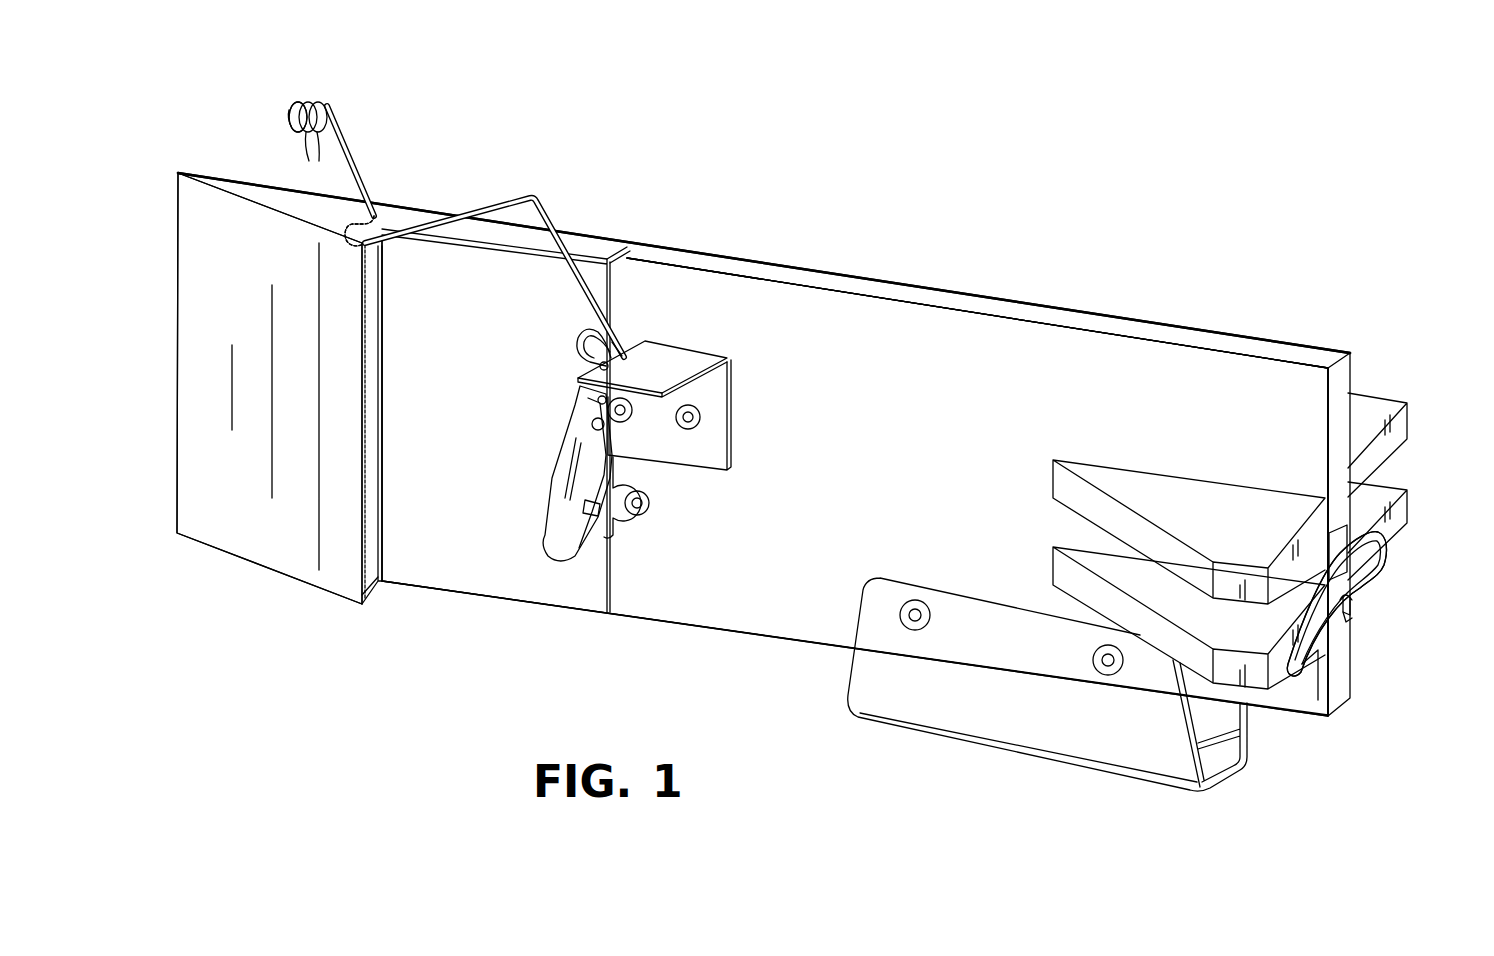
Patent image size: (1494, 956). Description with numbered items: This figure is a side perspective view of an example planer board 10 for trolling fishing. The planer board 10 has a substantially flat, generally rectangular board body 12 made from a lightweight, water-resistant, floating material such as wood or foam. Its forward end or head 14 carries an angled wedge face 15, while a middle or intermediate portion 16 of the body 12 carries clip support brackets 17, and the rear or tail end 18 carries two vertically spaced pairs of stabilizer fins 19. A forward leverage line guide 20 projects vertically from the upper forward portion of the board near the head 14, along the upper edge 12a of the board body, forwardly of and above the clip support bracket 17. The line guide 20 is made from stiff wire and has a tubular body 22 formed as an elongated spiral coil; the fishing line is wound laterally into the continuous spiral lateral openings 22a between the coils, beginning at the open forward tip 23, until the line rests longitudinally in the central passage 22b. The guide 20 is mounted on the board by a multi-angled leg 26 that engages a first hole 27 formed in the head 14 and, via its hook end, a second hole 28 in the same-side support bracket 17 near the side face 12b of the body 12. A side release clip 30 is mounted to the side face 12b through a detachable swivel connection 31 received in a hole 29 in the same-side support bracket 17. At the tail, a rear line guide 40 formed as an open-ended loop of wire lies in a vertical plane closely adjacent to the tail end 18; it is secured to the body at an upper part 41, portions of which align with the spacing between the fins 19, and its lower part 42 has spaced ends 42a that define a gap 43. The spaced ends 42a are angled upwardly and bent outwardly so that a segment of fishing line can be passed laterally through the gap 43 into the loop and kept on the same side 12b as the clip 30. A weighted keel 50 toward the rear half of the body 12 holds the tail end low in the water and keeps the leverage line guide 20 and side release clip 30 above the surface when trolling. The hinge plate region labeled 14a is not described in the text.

The planer board 10 is at (1133, 160).
The board body 12 is at (873, 270).
The upper edge 12a is at (782, 277).
The side face 12b is at (842, 438).
The head 14 is at (217, 177).
The hinge plate 14a is at (408, 215).
The angled wedge face 15 is at (209, 340).
The intermediate portion 16 is at (920, 353).
The clip support bracket 17 is at (685, 360).
The tail end 18 is at (1341, 395).
The stabilizer fins 19 is at (1190, 612).
The forward leverage line guide 20 is at (347, 104).
The tubular body 22 is at (332, 97).
The lateral openings 22a is at (321, 161).
The central passage 22b is at (280, 113).
The tip 23 is at (297, 128).
The multi-angled leg 26 is at (503, 195).
The first hole 27 is at (387, 215).
The second hole 28 is at (627, 350).
The hole 29 is at (606, 363).
The side release clip 30 is at (550, 430).
The detachable swivel connection 31 is at (578, 332).
The rear line guide 40 is at (1400, 556).
The upper part 41 is at (1373, 580).
The lower part 42 is at (1360, 602).
The spaced ends 42a is at (1353, 613).
The gap 43 is at (1352, 636).
The weighted keel 50 is at (1143, 750).